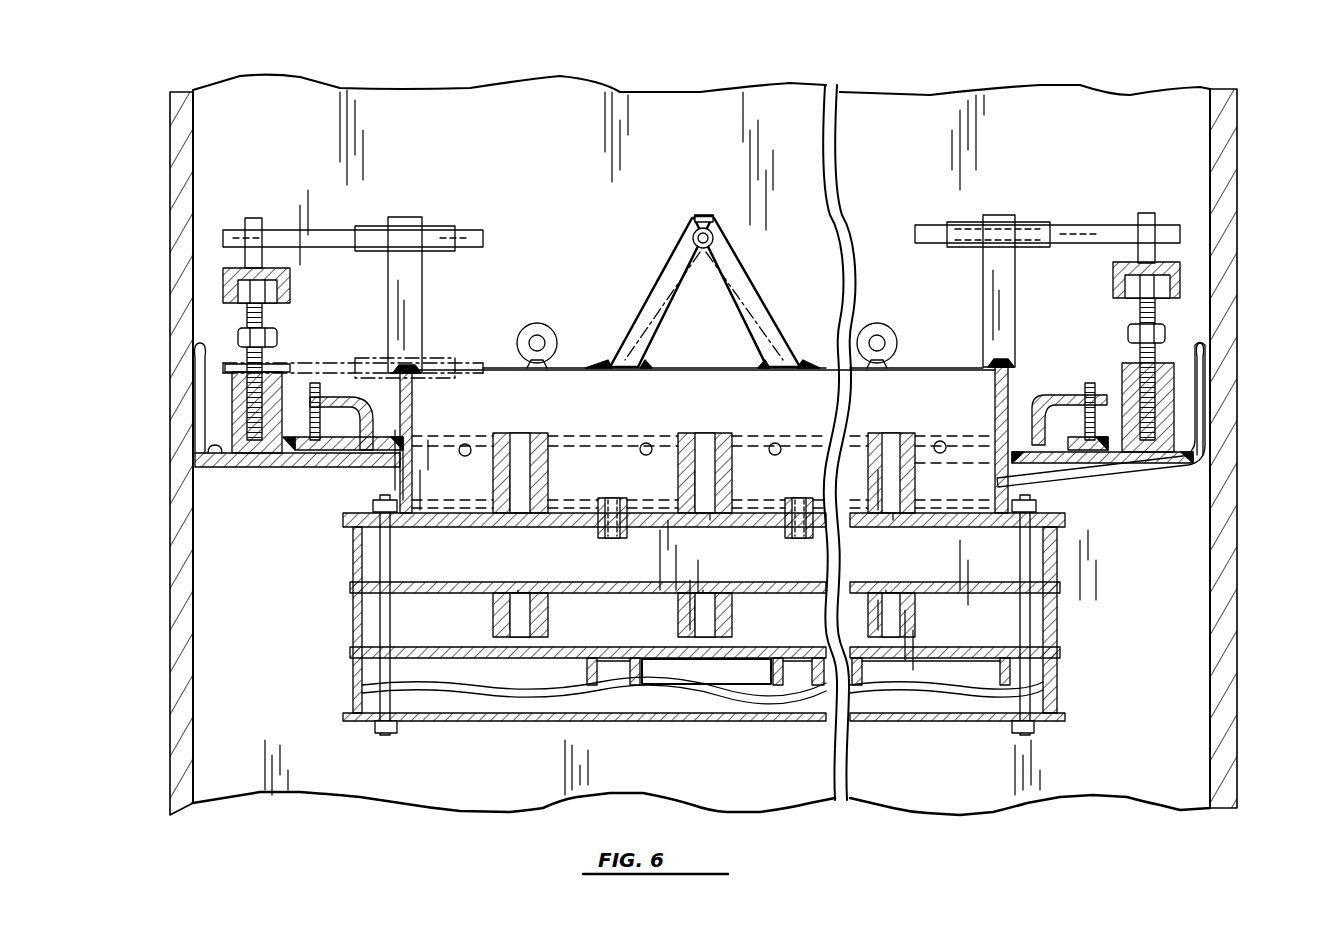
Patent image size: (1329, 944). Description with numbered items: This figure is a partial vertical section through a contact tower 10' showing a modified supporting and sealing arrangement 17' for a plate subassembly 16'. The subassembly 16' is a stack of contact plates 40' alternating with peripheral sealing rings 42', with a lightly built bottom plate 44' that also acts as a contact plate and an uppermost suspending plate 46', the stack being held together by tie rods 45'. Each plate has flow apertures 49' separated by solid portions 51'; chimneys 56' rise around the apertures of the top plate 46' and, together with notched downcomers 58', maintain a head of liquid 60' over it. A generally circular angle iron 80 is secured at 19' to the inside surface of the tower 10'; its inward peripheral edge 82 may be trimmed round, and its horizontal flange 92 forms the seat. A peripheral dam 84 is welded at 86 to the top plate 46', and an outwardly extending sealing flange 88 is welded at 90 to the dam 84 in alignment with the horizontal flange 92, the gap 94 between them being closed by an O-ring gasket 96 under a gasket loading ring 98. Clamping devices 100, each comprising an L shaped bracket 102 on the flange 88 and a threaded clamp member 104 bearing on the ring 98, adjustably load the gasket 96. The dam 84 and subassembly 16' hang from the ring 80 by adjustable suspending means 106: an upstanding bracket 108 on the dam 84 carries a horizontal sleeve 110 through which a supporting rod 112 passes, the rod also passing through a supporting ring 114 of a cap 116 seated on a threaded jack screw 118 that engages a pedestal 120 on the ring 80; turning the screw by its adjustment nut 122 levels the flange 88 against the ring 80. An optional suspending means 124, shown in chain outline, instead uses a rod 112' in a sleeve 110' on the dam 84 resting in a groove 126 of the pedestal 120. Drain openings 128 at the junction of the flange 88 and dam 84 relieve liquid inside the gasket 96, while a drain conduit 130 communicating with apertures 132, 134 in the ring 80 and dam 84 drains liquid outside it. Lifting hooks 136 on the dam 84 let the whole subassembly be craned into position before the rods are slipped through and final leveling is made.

The tower 10' is at (647, 445).
The plate subassembly 16' is at (703, 615).
The supporting and sealing arrangement 17' is at (139, 453).
The securement to tower wall 19' is at (642, 394).
The contact plate 40' is at (741, 615).
The peripheral sealing ring 42' is at (702, 623).
The bottom plate 44' is at (742, 741).
The tie rod 45' is at (704, 633).
The top suspending plate 46' is at (746, 620).
The flow aperture 49' is at (705, 646).
The solid plate portion 51' is at (704, 572).
The chimney 56' is at (704, 510).
The notched downcomer 58' is at (705, 532).
The liquid 60' is at (703, 438).
The angle iron 80 is at (200, 458).
The inward peripheral edge 82 is at (400, 475).
The peripheral dam 84 is at (412, 485).
The weld 86 is at (388, 520).
The sealing flange 88 is at (330, 470).
The weld 90 is at (398, 467).
The horizontal flange 92 is at (260, 467).
The gap 94 is at (405, 467).
The O-ring gasket 96 is at (1108, 380).
The gasket loading ring 98 is at (1053, 380).
The clamping device 100 is at (372, 405).
The L shaped bracket 102 is at (1032, 402).
The clamp member 104 is at (1050, 380).
The suspending means 106 is at (703, 210).
The upstanding bracket 108 is at (422, 285).
The sleeve 110 is at (700, 204).
The sleeve 110' is at (456, 333).
The supporting rod 112 is at (701, 196).
The supporting rod 112' is at (356, 334).
The supporting ring 114 is at (235, 270).
The cap 116 is at (247, 310).
The threaded rod 118 is at (238, 337).
The pedestal 120 is at (232, 400).
The adjustment nut 122 is at (228, 364).
The optional suspending means 124 is at (305, 360).
The groove 126 is at (210, 448).
The drain opening 128 is at (462, 445).
The drain conduit 130 is at (1085, 482).
The aperture 132 is at (1203, 480).
The aperture 134 is at (1000, 484).
The lifting hook 136 is at (544, 325).